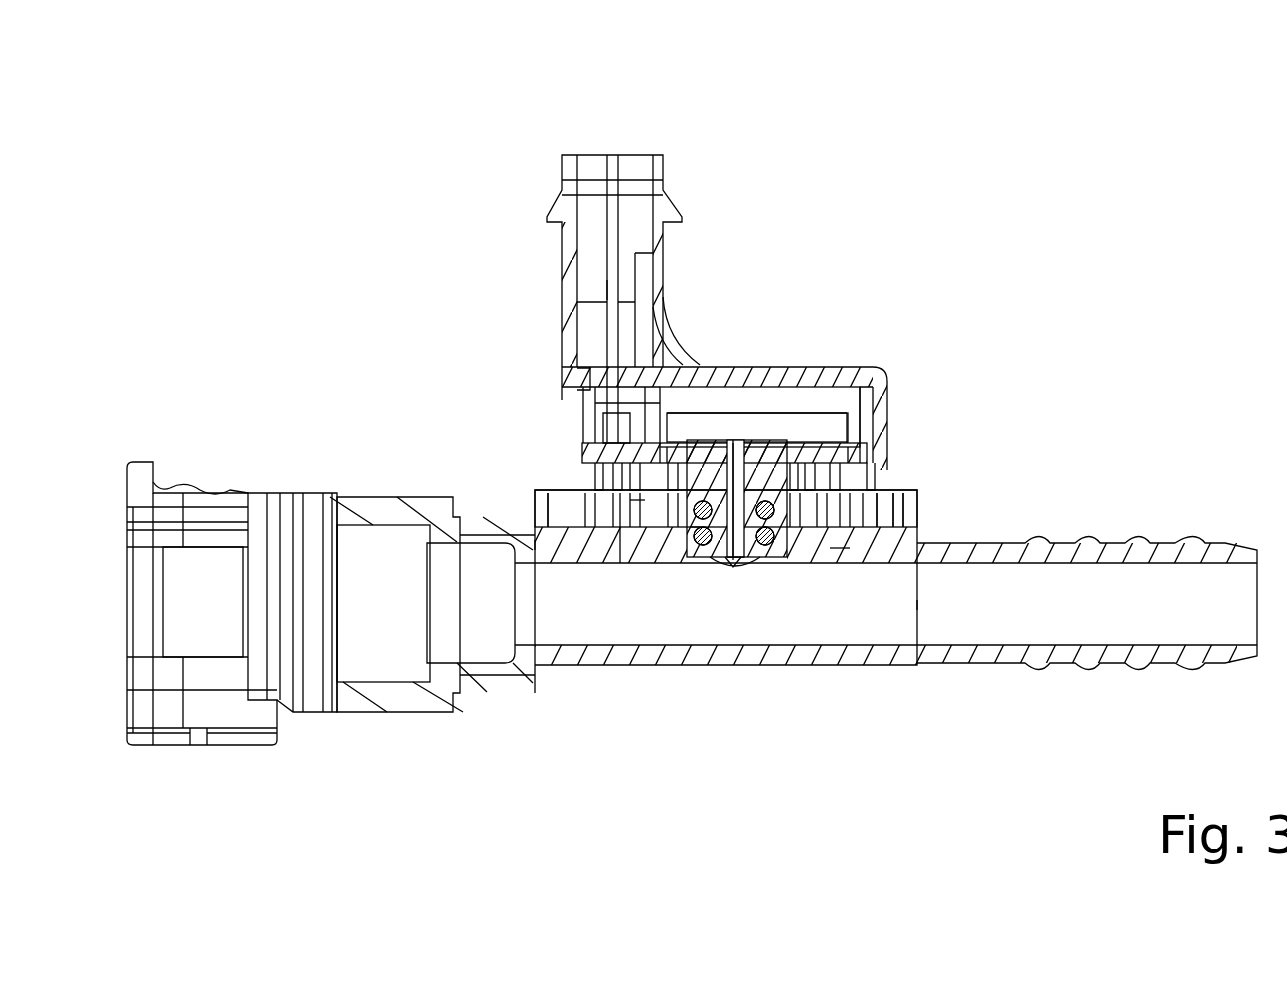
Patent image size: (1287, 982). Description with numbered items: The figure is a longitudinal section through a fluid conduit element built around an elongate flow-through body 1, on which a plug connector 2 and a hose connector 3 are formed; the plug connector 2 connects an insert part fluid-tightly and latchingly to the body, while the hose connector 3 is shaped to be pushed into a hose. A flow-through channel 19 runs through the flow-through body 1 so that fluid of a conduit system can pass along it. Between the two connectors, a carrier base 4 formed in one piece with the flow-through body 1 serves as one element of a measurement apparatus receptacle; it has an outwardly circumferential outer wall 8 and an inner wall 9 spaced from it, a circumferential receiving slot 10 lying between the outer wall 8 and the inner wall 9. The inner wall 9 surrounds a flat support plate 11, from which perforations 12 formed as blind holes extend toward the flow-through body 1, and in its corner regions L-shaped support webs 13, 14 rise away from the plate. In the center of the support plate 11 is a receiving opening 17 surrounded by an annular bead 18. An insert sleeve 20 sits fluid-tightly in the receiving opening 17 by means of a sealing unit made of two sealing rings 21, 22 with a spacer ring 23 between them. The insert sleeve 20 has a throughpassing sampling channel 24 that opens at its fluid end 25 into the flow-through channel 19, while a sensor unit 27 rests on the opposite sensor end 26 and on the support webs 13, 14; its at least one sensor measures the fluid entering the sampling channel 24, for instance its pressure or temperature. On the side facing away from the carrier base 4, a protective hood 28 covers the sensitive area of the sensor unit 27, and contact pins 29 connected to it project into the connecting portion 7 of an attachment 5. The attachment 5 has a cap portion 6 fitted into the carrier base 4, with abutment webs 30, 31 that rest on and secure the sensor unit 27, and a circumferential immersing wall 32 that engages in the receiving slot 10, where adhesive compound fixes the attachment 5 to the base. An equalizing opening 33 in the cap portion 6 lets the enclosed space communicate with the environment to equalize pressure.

The flow-through body 1 is at (650, 658).
The plug connector 2 is at (203, 712).
The hose connector 3 is at (1108, 548).
The carrier base 4 is at (840, 550).
The attachment 5 is at (788, 138).
The cap portion 6 is at (866, 427).
The connecting portion 7 is at (562, 248).
The outer wall 8 is at (910, 507).
The inner wall 9 is at (540, 512).
The receiving slot 10 is at (552, 480).
The support plate 11 is at (637, 503).
The perforations 12 is at (697, 522).
The support web 13 is at (570, 478).
The support web 14 is at (905, 492).
The receiving opening 17 is at (723, 585).
The annular bead 18 is at (893, 520).
The flow-through channel 19 is at (897, 608).
The insert sleeve 20 is at (855, 366).
The sealing ring 21 is at (702, 548).
The sealing ring 22 is at (640, 560).
The spacer ring 23 is at (777, 527).
The sampling channel 24 is at (760, 352).
The fluid end 25 is at (745, 568).
The sensor end 26 is at (718, 423).
The sensor unit 27 is at (770, 445).
The protective hood 28 is at (877, 462).
The contact pins 29 is at (610, 288).
The abutment web 30 is at (595, 400).
The abutment web 31 is at (887, 460).
The immersing wall 32 is at (912, 500).
The equalizing opening 33 is at (763, 418).